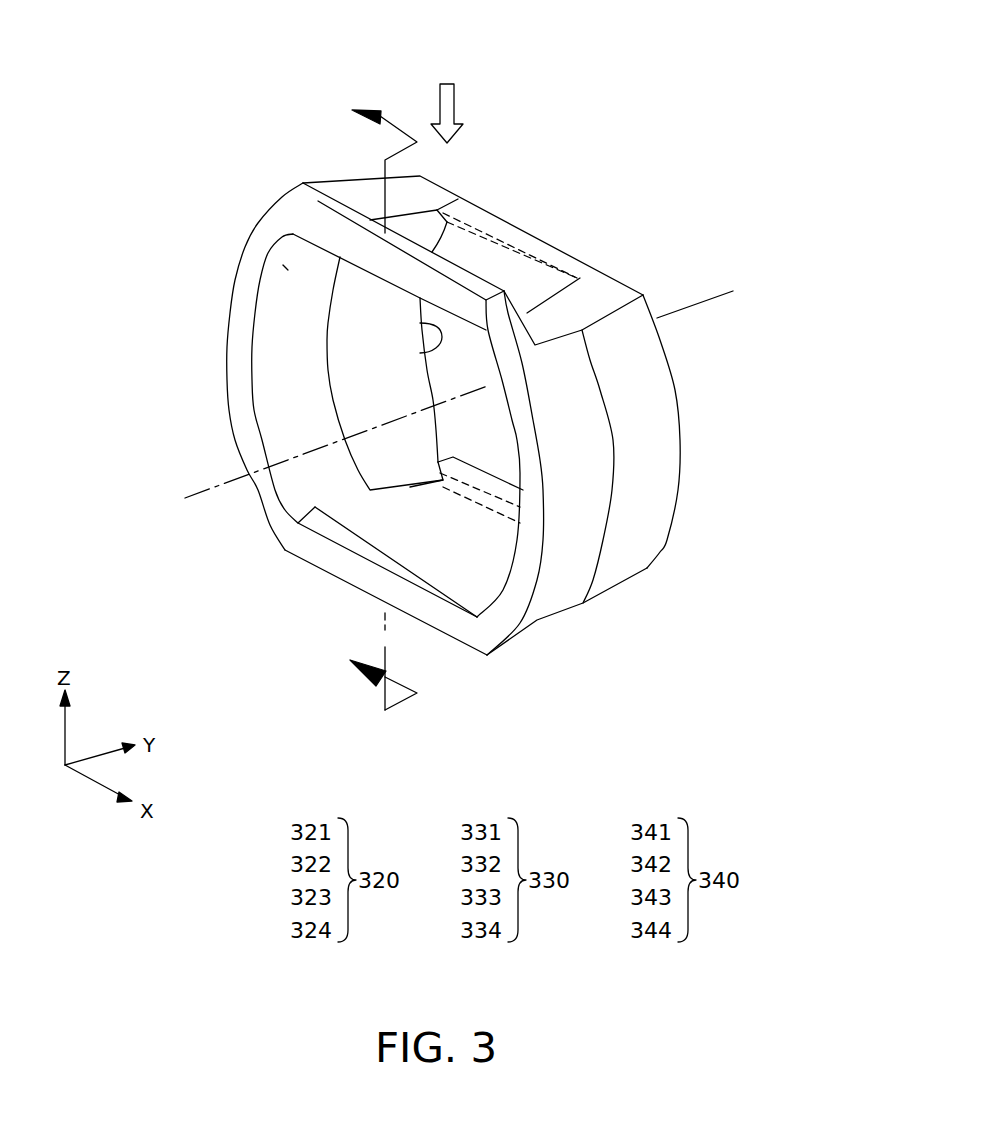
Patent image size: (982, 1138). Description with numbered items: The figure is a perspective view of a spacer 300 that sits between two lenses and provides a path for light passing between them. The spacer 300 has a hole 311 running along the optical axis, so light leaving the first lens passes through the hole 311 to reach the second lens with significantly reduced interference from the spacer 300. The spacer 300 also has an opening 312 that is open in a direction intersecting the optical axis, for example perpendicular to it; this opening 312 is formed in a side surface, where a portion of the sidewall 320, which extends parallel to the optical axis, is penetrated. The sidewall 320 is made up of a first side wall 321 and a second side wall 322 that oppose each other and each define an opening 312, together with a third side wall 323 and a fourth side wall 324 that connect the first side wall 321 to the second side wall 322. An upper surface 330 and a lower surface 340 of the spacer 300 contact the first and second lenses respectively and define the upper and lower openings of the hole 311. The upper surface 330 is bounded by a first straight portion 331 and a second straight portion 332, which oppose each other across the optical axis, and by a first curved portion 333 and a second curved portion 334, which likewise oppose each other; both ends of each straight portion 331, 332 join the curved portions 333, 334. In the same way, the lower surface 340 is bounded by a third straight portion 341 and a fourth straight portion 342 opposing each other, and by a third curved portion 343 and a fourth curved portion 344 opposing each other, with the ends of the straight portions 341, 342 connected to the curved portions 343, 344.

The spacer 300 is at (317, 37).
The hole 311 is at (388, 378).
The opening 312 is at (453, 253).
The sidewall 320 is at (582, 583).
The first side wall 321 is at (583, 308).
The second side wall 322 is at (561, 613).
The third side wall 323 is at (650, 375).
The fourth side wall 324 is at (285, 267).
The upper surface 330 is at (307, 552).
The first straight portion 331 is at (343, 240).
The second straight portion 332 is at (347, 572).
The first curved portion 333 is at (530, 477).
The second curved portion 334 is at (235, 343).
The lower surface 340 is at (577, 278).
The third straight portion 341 is at (527, 240).
The fourth straight portion 342 is at (507, 490).
The third curved portion 343 is at (680, 412).
The fourth curved portion 344 is at (420, 353).